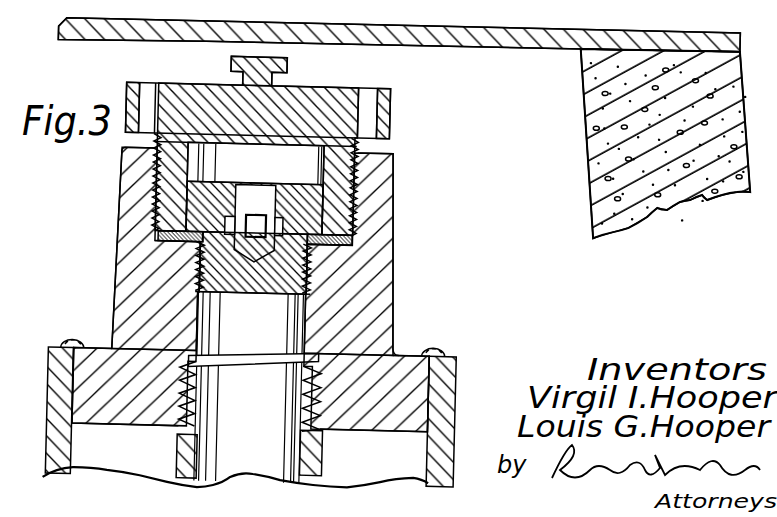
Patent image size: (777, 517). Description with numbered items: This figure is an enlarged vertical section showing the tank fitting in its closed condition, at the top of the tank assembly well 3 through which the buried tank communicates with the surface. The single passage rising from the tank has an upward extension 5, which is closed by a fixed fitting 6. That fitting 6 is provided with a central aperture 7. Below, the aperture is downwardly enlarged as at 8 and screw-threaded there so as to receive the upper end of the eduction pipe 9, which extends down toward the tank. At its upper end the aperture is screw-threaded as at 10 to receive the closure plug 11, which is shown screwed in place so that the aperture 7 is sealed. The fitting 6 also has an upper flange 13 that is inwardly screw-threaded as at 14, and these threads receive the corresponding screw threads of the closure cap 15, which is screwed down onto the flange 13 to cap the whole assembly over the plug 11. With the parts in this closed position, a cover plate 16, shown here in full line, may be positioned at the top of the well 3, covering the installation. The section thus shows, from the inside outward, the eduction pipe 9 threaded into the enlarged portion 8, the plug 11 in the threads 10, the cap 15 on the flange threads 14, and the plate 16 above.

The tank assembly well 3 is at (711, 109).
The upward extension 5 is at (449, 375).
The fixed fitting 6 is at (357, 370).
The central aperture 7 is at (283, 306).
The downwardly enlarged portion 8 is at (316, 399).
The eduction pipe 9 is at (316, 461).
The screw threads at upper end of aperture 10 is at (309, 261).
The closure plug 11 is at (216, 203).
The upper flange 13 is at (125, 183).
The screw threads of the flange 14 is at (150, 200).
The closure cap 15 is at (178, 104).
The cover plate 16 is at (448, 22).